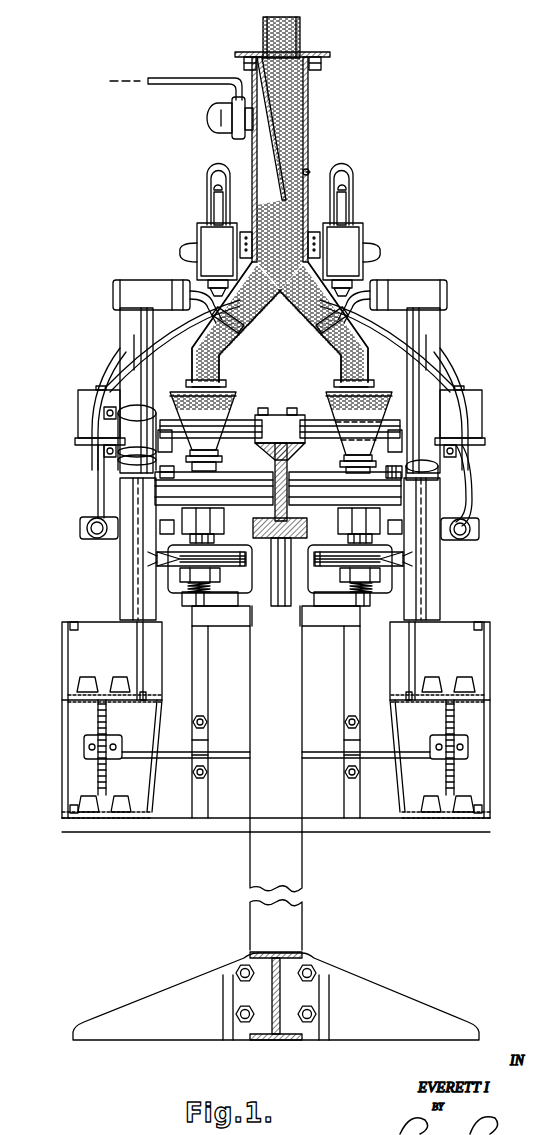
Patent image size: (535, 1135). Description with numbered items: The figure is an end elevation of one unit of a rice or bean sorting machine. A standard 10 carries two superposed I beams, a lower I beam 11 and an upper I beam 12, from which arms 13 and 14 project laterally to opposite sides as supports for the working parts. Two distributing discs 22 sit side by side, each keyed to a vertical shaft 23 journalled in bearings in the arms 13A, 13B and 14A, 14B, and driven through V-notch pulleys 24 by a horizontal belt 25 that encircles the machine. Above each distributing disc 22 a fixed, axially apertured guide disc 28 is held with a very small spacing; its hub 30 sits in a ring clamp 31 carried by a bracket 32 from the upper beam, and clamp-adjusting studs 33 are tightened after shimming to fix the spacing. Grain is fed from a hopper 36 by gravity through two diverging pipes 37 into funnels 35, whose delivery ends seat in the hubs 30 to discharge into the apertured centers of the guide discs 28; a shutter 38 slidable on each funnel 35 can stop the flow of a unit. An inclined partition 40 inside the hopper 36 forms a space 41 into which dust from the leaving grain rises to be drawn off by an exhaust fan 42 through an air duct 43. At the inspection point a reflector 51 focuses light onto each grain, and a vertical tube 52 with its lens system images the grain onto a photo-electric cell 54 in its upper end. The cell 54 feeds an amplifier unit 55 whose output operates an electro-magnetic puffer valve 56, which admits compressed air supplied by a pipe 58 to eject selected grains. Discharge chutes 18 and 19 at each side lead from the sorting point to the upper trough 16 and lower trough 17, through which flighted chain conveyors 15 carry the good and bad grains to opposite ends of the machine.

The standard 10 is at (294, 882).
The I beam 11 is at (291, 612).
The I beam 12 is at (296, 462).
The arm 13 is at (316, 430).
The arm 14 is at (238, 430).
The arm 13A is at (430, 540).
The arm 14A is at (200, 540).
The arm 13B is at (350, 607).
The arm 14B is at (206, 607).
The conveyor 15 is at (120, 680).
The upper trough 16 is at (80, 624).
The lower trough 17 is at (80, 776).
The discharge chute 18 is at (118, 520).
The discharge chute 19 is at (136, 590).
The distributing disc 22 is at (128, 508).
The shaft 23 is at (162, 532).
The V-notch pulley 24 is at (230, 572).
The belt 25 is at (160, 558).
The guide disc 28 is at (100, 476).
The hub 30 is at (185, 470).
The ring clamp 31 is at (381, 476).
The bracket 32 is at (236, 478).
The clamp-adjusting stud 33 is at (414, 470).
The funnel 35 is at (232, 392).
The hopper 36 is at (254, 257).
The diverging pipe 37 is at (297, 315).
The shutter 38 is at (236, 370).
The inclined partition 40 is at (260, 120).
The space 41 is at (257, 166).
The exhaust fan 42 is at (212, 118).
The air duct 43 is at (158, 85).
The reflector 51 is at (126, 420).
The tube 52 is at (126, 319).
The photo-electric cell 54 is at (140, 290).
The amplifier unit 55 is at (198, 232).
The electro-magnetic puffer valve 56 is at (78, 402).
The pipe 58 is at (81, 528).